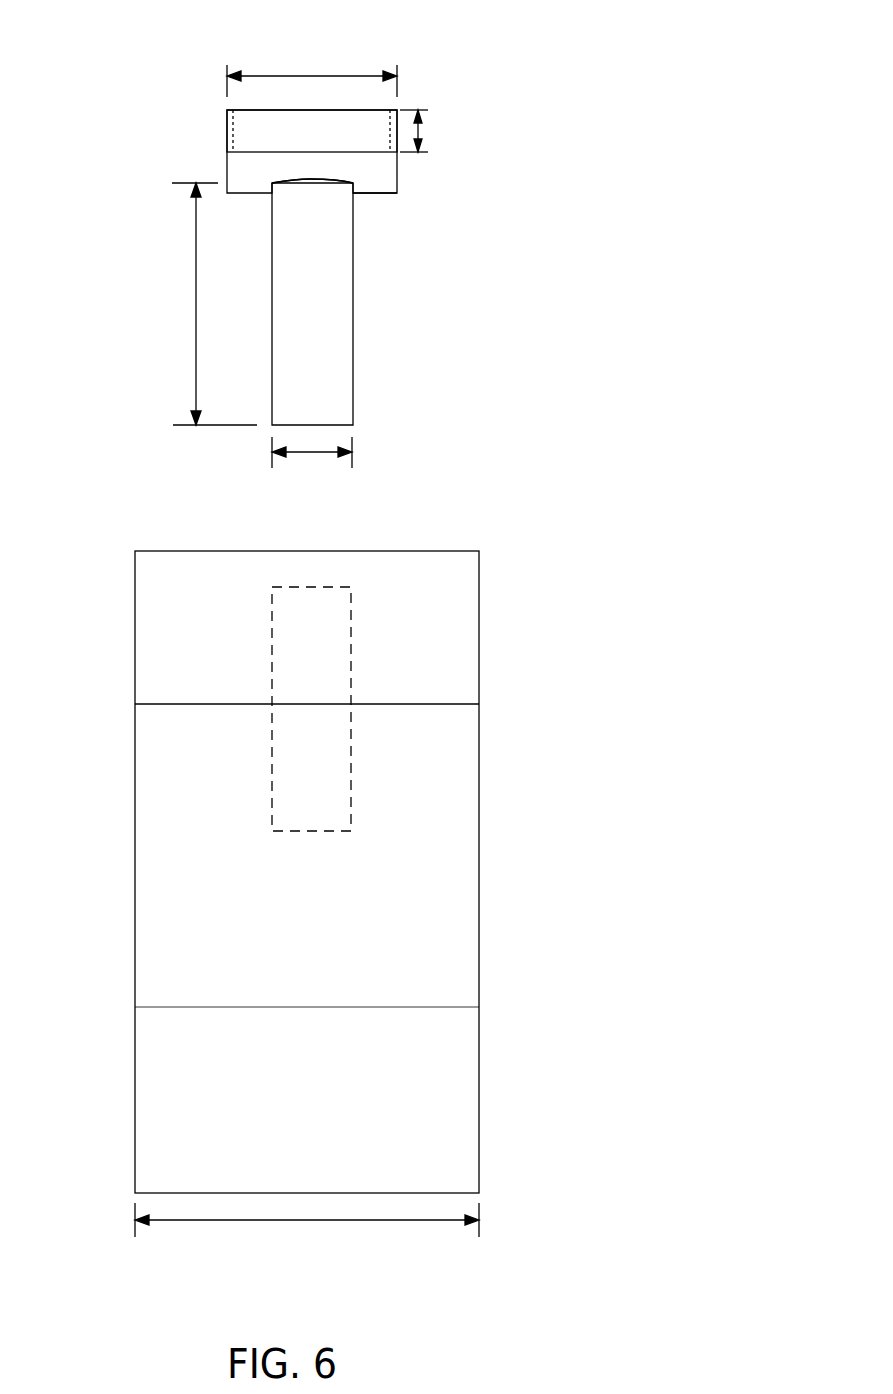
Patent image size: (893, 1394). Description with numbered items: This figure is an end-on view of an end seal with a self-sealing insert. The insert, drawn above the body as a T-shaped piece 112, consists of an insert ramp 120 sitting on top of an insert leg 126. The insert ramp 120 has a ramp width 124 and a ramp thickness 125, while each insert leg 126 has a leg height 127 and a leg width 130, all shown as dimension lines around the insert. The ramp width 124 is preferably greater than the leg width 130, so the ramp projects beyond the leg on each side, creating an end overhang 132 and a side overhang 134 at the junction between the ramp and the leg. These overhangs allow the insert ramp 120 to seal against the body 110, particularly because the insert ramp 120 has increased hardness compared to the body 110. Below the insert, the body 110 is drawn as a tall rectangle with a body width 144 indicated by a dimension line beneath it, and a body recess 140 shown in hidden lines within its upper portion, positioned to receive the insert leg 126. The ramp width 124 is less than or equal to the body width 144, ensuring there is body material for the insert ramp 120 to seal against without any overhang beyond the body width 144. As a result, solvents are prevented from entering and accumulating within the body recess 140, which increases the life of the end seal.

The body 110 is at (465, 668).
The fastener 112 is at (168, 60).
The insert ramp 120 is at (256, 132).
The ramp width 124 is at (311, 76).
The ramp thickness 125 is at (422, 131).
The insert leg 126 is at (327, 315).
The leg height 127 is at (196, 305).
The leg width 130 is at (313, 455).
The end overhang 132 is at (300, 179).
The side overhang 134 is at (380, 183).
The body recess 140 is at (352, 647).
The body width 144 is at (307, 1222).